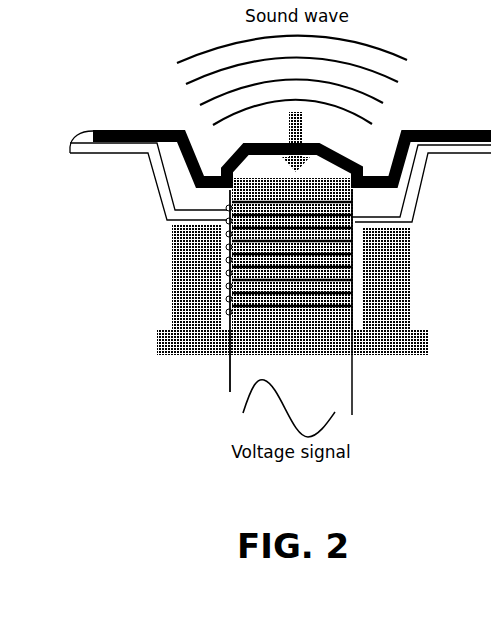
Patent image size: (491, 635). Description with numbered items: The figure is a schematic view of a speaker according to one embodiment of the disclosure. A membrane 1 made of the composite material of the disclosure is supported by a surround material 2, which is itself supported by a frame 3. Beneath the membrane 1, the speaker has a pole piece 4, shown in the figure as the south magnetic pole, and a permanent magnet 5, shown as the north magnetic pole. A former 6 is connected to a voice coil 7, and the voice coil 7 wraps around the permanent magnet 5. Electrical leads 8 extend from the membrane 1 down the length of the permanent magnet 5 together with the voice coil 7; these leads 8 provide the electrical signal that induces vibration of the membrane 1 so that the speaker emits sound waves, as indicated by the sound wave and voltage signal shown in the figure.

The membrane 1 is at (139, 127).
The surround material 2 is at (77, 132).
The frame 3 is at (132, 161).
The pole piece 4 is at (419, 280).
The permanent magnet 5 is at (293, 189).
The former 6 is at (355, 200).
The voice coil 7 is at (344, 304).
The lead wire 8 is at (228, 393).